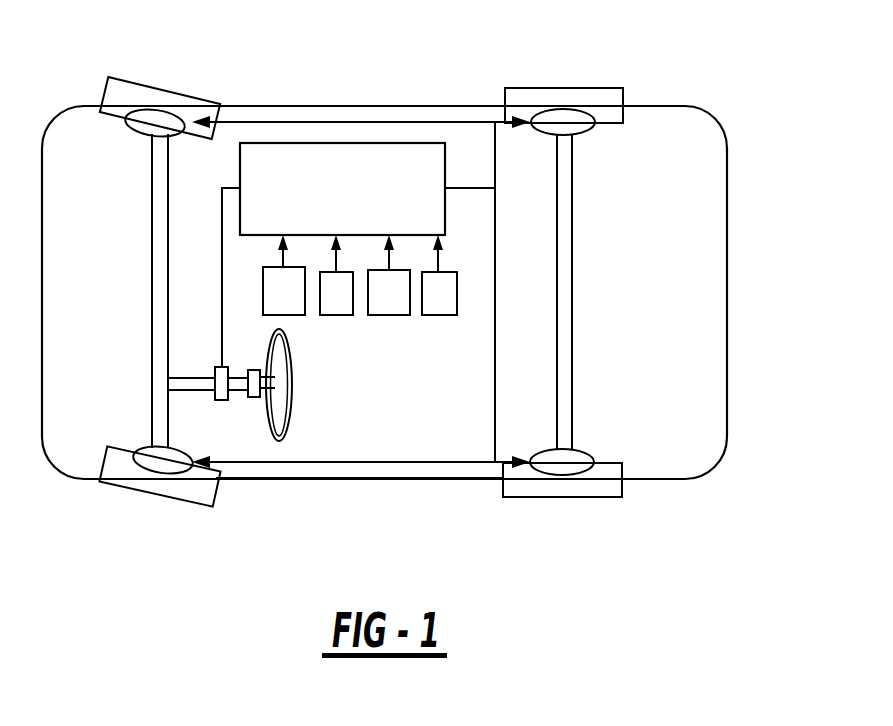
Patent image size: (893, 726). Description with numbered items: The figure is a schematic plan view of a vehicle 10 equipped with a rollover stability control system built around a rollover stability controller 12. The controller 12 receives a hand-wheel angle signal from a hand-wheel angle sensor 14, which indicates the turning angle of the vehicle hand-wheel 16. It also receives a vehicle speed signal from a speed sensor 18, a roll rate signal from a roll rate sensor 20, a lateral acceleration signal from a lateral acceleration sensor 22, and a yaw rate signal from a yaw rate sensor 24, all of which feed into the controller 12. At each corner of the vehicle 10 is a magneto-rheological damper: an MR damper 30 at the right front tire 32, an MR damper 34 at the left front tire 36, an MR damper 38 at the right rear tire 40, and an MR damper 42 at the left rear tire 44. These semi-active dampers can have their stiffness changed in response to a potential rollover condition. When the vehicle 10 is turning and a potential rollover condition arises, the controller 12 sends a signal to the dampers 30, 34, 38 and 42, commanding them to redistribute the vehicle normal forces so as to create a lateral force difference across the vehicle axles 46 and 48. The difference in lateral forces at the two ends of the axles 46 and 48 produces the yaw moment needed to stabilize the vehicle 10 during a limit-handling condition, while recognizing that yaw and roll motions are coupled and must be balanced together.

The vehicle 10 is at (730, 43).
The rollover stability controller 12 is at (239, 160).
The hand-wheel angle sensor 14 is at (218, 369).
The vehicle hand-wheel 16 is at (288, 430).
The speed sensor 18 is at (263, 291).
The roll rate sensor 20 is at (336, 317).
The lateral acceleration sensor 22 is at (389, 317).
The yaw rate sensor 24 is at (435, 317).
The MR damper 30 is at (137, 133).
The right front tire 32 is at (135, 80).
The MR damper 34 is at (160, 483).
The left front tire 36 is at (198, 506).
The MR damper 38 is at (593, 126).
The right rear tire 40 is at (595, 88).
The MR damper 42 is at (588, 450).
The left rear tire 44 is at (560, 497).
The vehicle axle 46 is at (153, 295).
The vehicle axle 48 is at (573, 242).